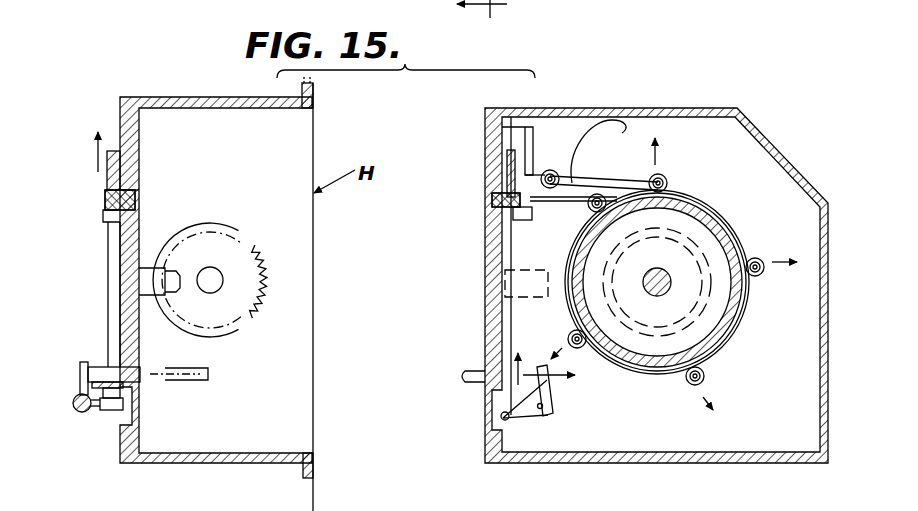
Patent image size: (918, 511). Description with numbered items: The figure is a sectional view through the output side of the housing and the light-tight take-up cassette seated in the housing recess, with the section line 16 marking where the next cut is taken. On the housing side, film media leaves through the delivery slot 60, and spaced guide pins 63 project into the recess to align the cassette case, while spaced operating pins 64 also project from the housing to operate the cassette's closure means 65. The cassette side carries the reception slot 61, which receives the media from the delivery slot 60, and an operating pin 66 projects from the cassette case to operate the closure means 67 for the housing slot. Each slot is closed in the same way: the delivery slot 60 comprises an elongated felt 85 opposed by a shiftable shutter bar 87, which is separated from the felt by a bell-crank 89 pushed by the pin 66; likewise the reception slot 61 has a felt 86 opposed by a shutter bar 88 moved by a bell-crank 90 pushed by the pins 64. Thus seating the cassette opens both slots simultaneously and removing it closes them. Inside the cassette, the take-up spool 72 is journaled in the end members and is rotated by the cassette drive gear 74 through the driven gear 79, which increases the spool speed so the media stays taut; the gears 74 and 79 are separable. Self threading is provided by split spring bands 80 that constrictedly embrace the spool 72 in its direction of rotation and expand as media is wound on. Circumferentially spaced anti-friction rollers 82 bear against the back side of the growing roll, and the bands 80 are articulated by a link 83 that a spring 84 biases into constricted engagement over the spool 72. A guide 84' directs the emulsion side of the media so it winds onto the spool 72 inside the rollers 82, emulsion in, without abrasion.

The section line 16- 16 is at (122, 66).
The delivery slot 60 is at (134, 183).
The reception slot 61 is at (497, 186).
The guide pins 63 is at (152, 266).
The operating pins 64 is at (192, 376).
The closure means 65 is at (556, 393).
The operating pin 66 is at (475, 383).
The closure means 67 is at (85, 350).
The take-up spool 72 is at (700, 210).
The cassette drive gear 74 is at (256, 250).
The driven gear 79 is at (704, 317).
The spring bands 80 is at (742, 231).
The anti-friction rollers 82 is at (668, 184).
The link 83 is at (633, 180).
The spring 84 is at (598, 133).
The guide 84' is at (565, 224).
The felt 85 is at (105, 200).
The felt 86 is at (504, 203).
The shutter bar 87 is at (118, 172).
The shutter bar 88 is at (520, 172).
The bell-crank 89 is at (105, 411).
The bell-crank 90 is at (535, 413).